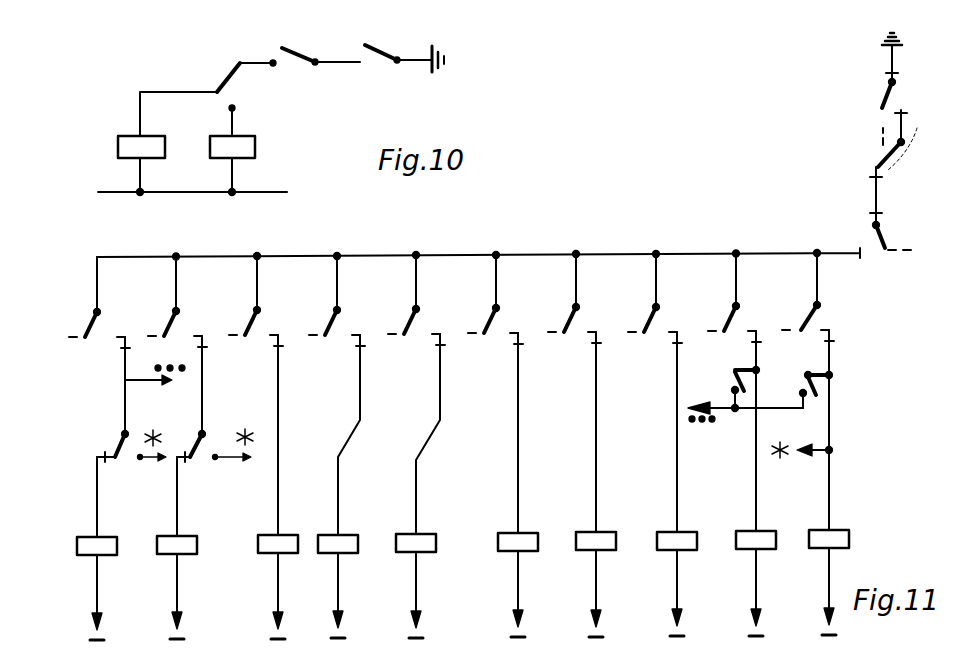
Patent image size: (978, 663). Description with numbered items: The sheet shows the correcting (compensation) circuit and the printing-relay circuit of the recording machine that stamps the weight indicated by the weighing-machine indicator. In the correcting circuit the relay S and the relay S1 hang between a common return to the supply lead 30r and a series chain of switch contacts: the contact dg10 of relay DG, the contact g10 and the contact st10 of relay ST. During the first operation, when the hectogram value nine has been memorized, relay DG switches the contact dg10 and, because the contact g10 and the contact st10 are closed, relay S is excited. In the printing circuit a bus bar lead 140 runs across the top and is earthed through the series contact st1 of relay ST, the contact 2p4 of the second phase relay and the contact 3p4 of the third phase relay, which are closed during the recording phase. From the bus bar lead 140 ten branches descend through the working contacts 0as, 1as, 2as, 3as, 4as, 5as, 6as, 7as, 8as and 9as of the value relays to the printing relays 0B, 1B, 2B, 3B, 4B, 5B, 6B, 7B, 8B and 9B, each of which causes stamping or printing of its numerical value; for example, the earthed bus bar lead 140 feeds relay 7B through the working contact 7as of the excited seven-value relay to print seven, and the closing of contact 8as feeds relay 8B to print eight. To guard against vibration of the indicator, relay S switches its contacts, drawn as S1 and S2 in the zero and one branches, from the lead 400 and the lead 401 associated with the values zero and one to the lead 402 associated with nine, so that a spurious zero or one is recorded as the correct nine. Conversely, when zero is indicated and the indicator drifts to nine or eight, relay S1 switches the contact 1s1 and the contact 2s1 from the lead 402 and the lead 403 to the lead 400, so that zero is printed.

In FIG. 10, the relay S1 is at (118, 152).
In FIG. 11, the relay S1 is at (112, 399).
In FIG. 10, the relay S is at (257, 146).
In FIG. 10, the contact dg10 is at (232, 82).
In FIG. 10, the contact g10 is at (298, 55).
In FIG. 10, the contact st10 is at (378, 50).
In FIG. 10, the lead 30r is at (215, 192).
In FIG. 11, the bus bar lead 140 is at (785, 253).
In FIG. 11, the contact st1 is at (897, 88).
In FIG. 11, the contact 2p4 is at (890, 158).
In FIG. 11, the contact 3p4 is at (888, 236).
In FIG. 11, the working contact 0as is at (99, 308).
In FIG. 11, the working contact 1as is at (177, 307).
In FIG. 11, the working contact 2as is at (252, 309).
In FIG. 11, the working contact 3as is at (332, 309).
In FIG. 11, the working contact 4as is at (413, 308).
In FIG. 11, the working contact 5as is at (495, 308).
In FIG. 11, the working contact 6as is at (574, 308).
In FIG. 11, the working contact 7as is at (654, 308).
In FIG. 11, the contact 8as is at (731, 308).
In FIG. 11, the working contact 9as is at (808, 305).
In FIG. 11, the contact s2 S2 is at (190, 399).
In FIG. 11, the lead 400 is at (125, 373).
In FIG. 11, the lead 401 is at (204, 403).
In FIG. 11, the lead 402 is at (832, 474).
In FIG. 11, the lead 403 is at (756, 494).
In FIG. 11, the contact 1s1 is at (736, 373).
In FIG. 11, the contact 2s1 is at (808, 410).
In FIG. 11, the relay 0B is at (78, 552).
In FIG. 11, the relay 1B is at (158, 548).
In FIG. 11, the relay 2B is at (268, 546).
In FIG. 11, the relay 3B is at (330, 550).
In FIG. 11, the relay 4B is at (398, 550).
In FIG. 11, the relay 5B is at (500, 546).
In FIG. 11, the relay 6B is at (582, 545).
In FIG. 11, the relay 7B is at (665, 546).
In FIG. 11, the relay 8B is at (742, 549).
In FIG. 11, the relay 9B is at (838, 542).